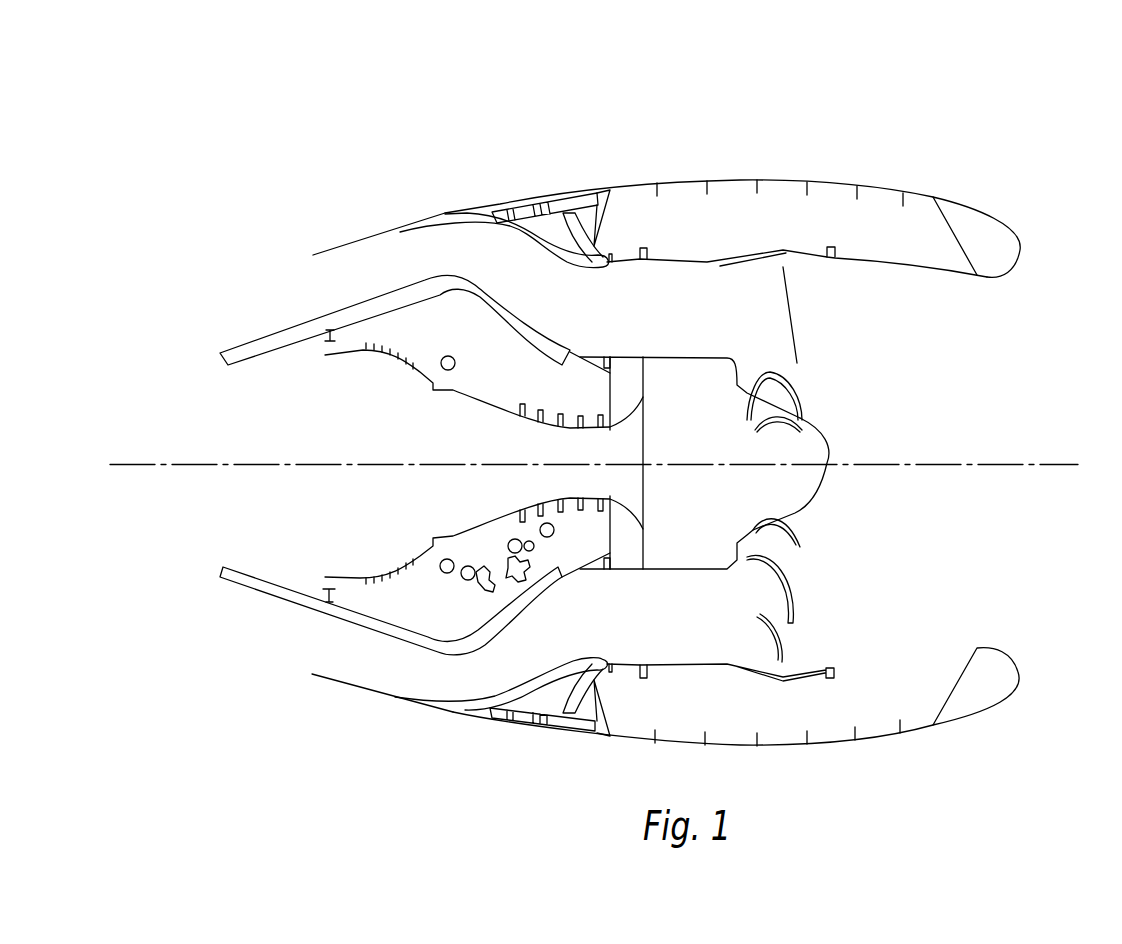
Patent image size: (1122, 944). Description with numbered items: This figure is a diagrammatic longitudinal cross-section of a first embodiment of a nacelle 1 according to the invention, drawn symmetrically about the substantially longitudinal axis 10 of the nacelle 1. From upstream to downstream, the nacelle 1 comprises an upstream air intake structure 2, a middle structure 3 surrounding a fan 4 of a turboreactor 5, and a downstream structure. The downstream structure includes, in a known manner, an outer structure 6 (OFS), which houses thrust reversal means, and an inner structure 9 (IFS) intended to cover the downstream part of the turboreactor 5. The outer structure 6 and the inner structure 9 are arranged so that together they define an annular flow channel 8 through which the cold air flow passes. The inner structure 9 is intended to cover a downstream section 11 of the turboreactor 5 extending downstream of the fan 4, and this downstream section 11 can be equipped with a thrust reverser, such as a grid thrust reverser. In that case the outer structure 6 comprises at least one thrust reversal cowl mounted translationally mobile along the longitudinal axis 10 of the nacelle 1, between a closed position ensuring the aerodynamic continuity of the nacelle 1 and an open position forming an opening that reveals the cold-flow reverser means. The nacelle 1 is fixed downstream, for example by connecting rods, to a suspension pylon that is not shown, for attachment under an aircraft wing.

The nacelle 1 is at (940, 158).
The upstream air intake structure 2 is at (1017, 226).
The middle structure 3 is at (728, 180).
The fan 4 is at (717, 497).
The turboreactor 5 is at (540, 465).
The outer structure 6 is at (470, 207).
The annular flow channel 8 is at (380, 270).
The inner structure 9 is at (338, 308).
The longitudinal axis 10 is at (1014, 463).
The downstream section 11 is at (445, 210).